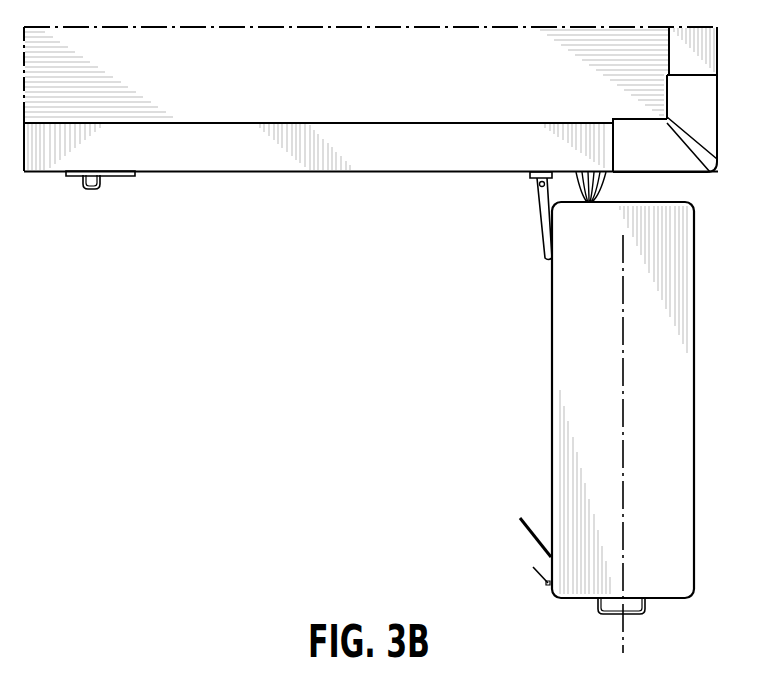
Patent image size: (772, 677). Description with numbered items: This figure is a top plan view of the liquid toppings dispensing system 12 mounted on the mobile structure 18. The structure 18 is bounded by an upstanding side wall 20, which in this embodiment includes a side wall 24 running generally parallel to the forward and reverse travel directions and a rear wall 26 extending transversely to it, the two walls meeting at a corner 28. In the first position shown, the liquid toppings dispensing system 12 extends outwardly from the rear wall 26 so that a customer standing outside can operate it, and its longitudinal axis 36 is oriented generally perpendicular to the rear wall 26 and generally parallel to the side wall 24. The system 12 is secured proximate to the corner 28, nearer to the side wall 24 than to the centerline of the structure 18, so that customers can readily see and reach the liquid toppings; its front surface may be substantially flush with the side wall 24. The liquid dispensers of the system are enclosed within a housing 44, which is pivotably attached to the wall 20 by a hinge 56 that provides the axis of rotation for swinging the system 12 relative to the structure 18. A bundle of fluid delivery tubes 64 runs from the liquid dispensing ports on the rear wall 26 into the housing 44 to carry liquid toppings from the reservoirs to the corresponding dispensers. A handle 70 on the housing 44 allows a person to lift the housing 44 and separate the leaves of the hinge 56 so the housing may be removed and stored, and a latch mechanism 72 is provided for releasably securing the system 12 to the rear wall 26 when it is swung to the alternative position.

The liquid toppings dispensing system 12 is at (652, 427).
The mobile structure 18 is at (397, 109).
The upstanding side wall 20 is at (176, 172).
The side wall 24 is at (717, 61).
The rear wall 26 is at (206, 173).
The corner 28 is at (716, 168).
The longitudinal axis 36 is at (622, 360).
The housing 44 is at (690, 388).
The hinge 56 is at (538, 213).
The fluid delivery tubes 64 is at (604, 193).
The handle 70 is at (645, 612).
The latch mechanism 72 is at (91, 189).